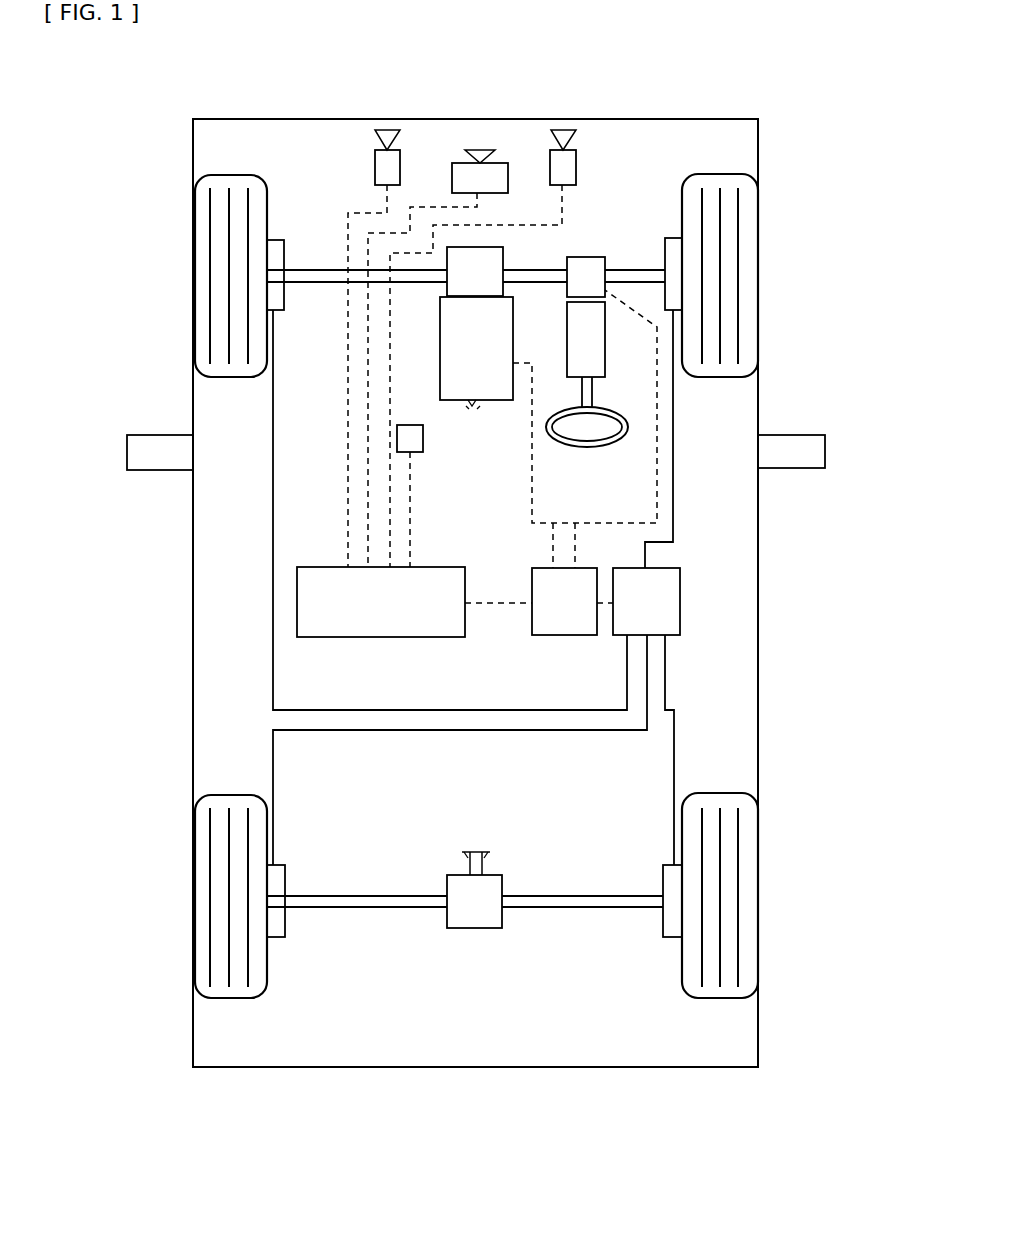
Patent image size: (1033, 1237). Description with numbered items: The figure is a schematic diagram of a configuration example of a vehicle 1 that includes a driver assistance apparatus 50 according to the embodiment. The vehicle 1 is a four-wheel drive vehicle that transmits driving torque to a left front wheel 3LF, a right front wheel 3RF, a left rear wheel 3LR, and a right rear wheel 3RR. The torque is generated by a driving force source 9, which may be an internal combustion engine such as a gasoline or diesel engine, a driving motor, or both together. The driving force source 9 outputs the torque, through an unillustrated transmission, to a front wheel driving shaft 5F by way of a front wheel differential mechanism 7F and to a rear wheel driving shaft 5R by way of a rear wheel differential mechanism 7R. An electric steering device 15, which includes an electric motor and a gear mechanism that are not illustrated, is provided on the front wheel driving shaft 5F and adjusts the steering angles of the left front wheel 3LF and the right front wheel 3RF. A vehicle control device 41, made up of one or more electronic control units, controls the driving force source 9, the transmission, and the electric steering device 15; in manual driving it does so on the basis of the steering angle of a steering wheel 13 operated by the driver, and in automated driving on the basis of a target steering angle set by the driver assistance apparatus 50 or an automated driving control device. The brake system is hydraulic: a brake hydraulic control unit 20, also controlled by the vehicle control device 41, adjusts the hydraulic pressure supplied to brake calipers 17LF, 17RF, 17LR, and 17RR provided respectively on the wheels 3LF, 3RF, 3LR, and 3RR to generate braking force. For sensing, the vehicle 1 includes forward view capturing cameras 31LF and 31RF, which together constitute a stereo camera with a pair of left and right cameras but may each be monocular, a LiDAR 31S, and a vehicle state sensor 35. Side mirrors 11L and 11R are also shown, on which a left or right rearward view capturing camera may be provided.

The vehicle 1 is at (770, 110).
The left front wheel 3LF is at (192, 245).
The right front wheel 3RF is at (752, 237).
The left rear wheel 3LR is at (192, 925).
The right rear wheel 3RR is at (752, 915).
The front wheel driving shaft 5F is at (310, 284).
The rear wheel driving shaft 5R is at (360, 909).
The front wheel differential mechanism 7F is at (503, 258).
The rear wheel differential mechanism 7R is at (475, 930).
The driving force source 9 is at (513, 325).
The side mirror 11L is at (130, 432).
The side mirror 11R is at (814, 436).
The steering wheel 13 is at (607, 413).
The electric steering device 15 is at (585, 257).
The brake caliper 17LF is at (285, 250).
The brake caliper 17RF is at (664, 254).
The brake caliper 17LR is at (285, 935).
The brake caliper 17RR is at (663, 932).
The brake hydraulic control unit 20 is at (476, 587).
The forward view capturing camera 31LF is at (374, 169).
The LiDAR 31S is at (452, 188).
The forward view capturing camera 31RF is at (576, 165).
The vehicle state sensor 35 is at (410, 425).
The vehicle control device 41 is at (585, 462).
The driver assistance apparatus 50 is at (414, 602).